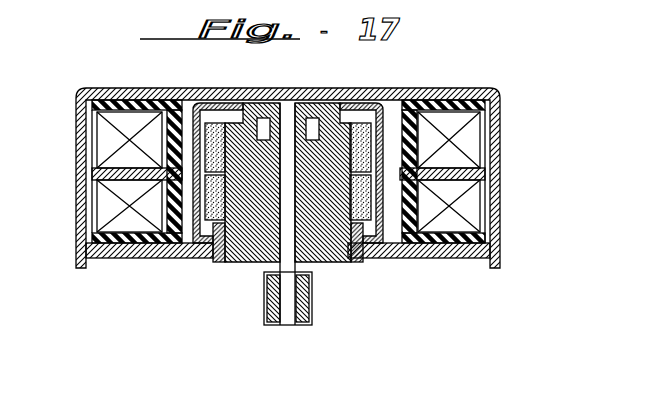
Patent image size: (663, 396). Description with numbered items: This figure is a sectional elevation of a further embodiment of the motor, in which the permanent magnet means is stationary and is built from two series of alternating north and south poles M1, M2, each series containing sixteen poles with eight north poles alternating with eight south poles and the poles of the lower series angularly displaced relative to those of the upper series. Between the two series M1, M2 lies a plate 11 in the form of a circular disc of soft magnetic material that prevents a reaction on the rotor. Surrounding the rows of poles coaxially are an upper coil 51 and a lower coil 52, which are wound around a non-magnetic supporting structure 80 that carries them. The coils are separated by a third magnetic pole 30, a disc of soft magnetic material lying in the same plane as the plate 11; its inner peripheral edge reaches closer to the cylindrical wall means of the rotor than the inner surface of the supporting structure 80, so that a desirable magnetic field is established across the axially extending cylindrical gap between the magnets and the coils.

The non-magnetic supporting structure 80 is at (404, 100).
The upper coil 51 is at (472, 135).
The lower coil 52 is at (452, 222).
The third magnetic pole 30 is at (458, 178).
The plate 11 is at (367, 175).
The first series of alternating north and south poles M1 is at (213, 137).
The second series of alternating north and south poles M2 is at (212, 208).